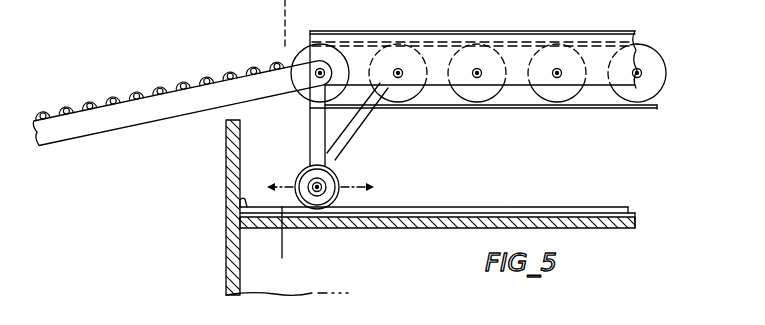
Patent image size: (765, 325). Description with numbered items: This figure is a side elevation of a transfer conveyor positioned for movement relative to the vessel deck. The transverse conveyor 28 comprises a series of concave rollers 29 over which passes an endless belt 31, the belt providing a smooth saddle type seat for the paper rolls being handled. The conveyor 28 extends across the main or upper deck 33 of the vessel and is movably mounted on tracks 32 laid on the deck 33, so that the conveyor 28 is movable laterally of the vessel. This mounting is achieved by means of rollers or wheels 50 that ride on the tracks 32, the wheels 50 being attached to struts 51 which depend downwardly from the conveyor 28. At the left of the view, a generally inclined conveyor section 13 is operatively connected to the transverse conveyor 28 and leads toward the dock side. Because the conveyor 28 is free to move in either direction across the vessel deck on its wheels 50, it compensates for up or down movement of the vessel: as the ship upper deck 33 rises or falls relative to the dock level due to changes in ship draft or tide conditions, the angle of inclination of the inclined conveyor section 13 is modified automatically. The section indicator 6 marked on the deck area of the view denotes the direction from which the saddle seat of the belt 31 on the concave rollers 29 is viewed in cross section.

The inclined conveyor section 13 is at (97, 125).
The transverse conveyor 28 is at (389, 108).
The concave rollers 29 is at (477, 96).
The endless belt 31 is at (588, 105).
The tracks 32 is at (425, 207).
The upper deck 33 is at (403, 230).
The rollers or wheels 50 is at (339, 178).
The struts 51 is at (309, 128).
The section line for FIG. 6 is at (281, 253).